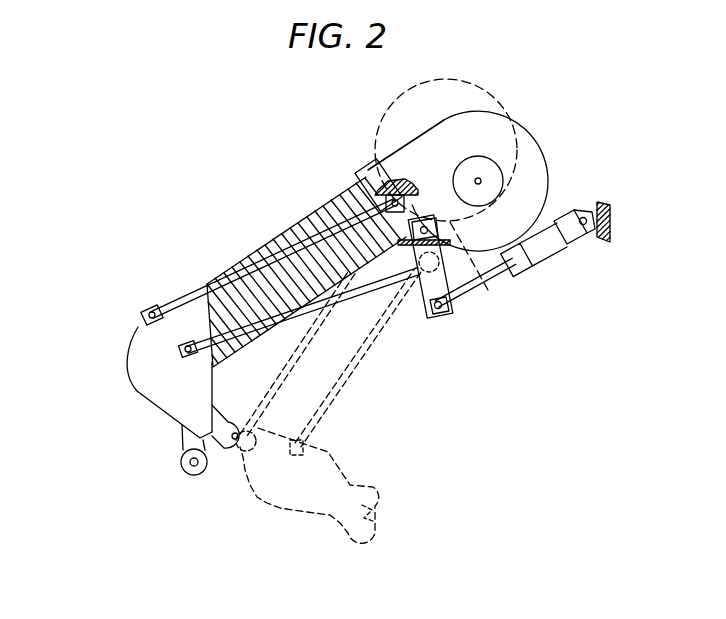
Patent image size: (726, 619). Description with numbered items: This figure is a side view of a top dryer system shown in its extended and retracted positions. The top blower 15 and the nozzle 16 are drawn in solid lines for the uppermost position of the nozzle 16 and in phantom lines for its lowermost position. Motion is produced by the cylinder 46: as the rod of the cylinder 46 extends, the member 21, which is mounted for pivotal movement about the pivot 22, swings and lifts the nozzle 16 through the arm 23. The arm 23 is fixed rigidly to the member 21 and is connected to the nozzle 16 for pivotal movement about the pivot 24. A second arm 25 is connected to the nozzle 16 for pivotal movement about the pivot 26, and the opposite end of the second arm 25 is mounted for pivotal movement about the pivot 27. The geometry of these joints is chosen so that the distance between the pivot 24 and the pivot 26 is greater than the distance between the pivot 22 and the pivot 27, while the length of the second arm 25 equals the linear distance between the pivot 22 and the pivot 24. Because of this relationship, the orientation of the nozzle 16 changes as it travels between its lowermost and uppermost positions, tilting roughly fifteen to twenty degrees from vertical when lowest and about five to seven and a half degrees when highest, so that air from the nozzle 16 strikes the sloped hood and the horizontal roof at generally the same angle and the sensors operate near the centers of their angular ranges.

The top blower 15 is at (531, 142).
The nozzle 16 is at (222, 452).
The member 21 is at (441, 316).
The pivot 22 is at (428, 223).
The arm 23 is at (353, 298).
The pivot 24 is at (187, 357).
The second arm 25 is at (256, 254).
The pivot 26 is at (148, 308).
The pivot 27 is at (374, 152).
The cylinder 46 is at (553, 253).